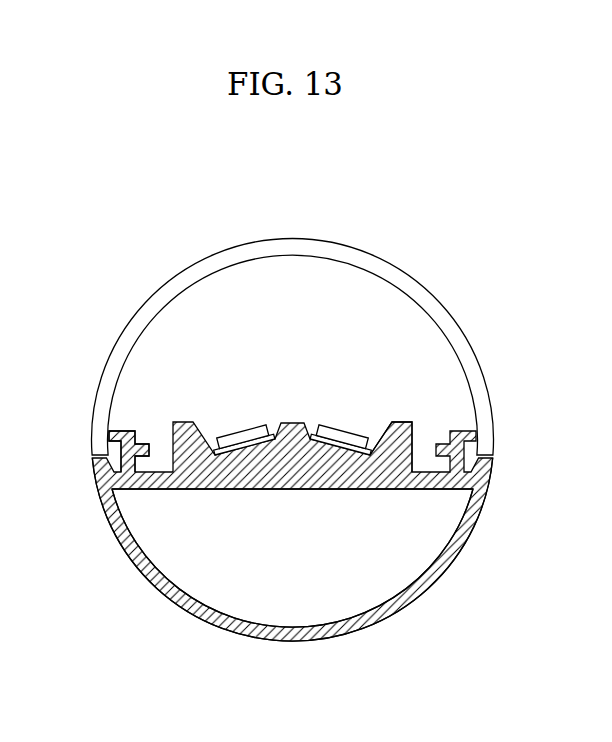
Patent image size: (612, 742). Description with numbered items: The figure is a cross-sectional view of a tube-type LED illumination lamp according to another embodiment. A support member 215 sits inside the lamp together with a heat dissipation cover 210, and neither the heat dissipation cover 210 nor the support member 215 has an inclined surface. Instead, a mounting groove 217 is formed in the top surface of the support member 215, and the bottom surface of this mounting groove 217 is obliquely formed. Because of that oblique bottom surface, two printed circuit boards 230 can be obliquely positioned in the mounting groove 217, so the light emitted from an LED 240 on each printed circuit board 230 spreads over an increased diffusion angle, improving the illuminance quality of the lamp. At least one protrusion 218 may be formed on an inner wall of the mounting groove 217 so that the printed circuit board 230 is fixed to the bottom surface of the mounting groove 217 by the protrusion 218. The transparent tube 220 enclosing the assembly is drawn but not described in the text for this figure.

The heat dissipation cover 210 is at (393, 608).
The support member 215 is at (258, 494).
The mounting groove 217 is at (347, 442).
The protrusion 218 is at (232, 489).
The cover 220 is at (355, 260).
The printed circuit board 230 is at (216, 452).
The LED 240 is at (248, 432).